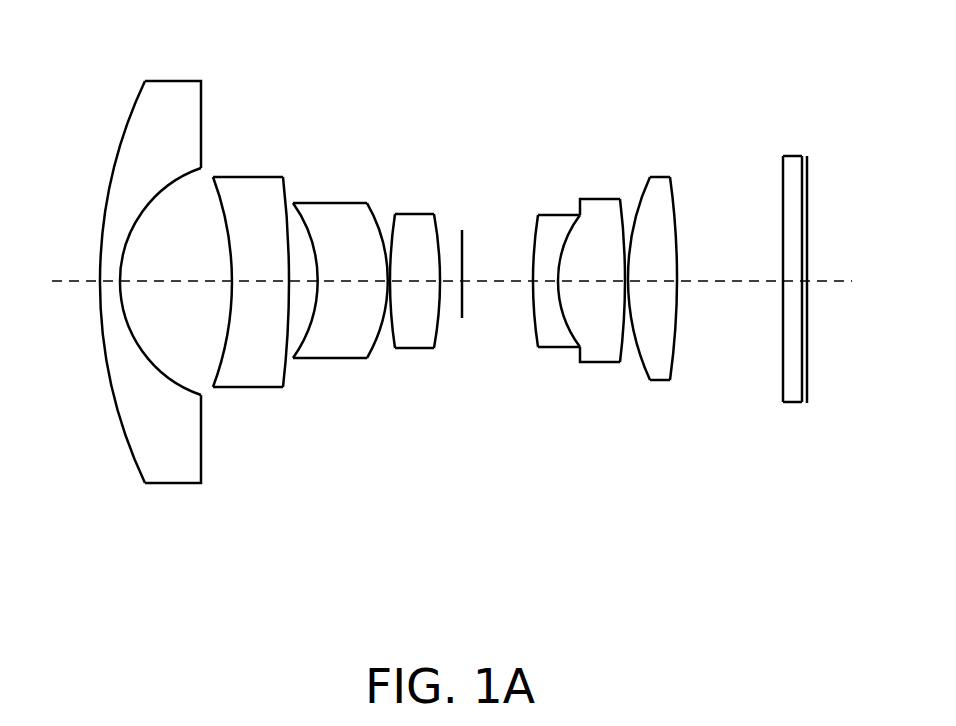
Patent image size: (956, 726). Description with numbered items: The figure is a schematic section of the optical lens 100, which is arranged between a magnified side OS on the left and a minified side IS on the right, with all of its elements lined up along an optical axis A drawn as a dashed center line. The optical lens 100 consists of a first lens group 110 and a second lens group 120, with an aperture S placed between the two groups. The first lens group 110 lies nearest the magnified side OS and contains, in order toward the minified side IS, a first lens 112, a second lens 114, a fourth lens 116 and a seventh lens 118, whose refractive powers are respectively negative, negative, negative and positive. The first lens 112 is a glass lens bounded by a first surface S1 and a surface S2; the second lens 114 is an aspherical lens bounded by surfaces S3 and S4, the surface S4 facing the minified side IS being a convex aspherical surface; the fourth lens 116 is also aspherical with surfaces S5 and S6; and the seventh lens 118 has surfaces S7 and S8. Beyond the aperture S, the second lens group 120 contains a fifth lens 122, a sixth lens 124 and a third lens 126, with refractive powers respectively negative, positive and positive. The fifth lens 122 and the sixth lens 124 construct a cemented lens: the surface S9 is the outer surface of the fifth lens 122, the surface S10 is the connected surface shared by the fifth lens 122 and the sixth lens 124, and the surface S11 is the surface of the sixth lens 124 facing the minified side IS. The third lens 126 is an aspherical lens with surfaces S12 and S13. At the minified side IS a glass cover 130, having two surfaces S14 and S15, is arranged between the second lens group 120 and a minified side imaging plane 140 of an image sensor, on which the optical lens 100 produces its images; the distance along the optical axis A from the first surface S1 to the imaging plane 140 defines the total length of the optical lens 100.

The optical lens 100 is at (868, 603).
The first lens group 110 is at (397, 552).
The first lens 112 is at (167, 286).
The second lens 114 is at (259, 321).
The fourth lens 116 is at (340, 334).
The seventh lens 118 is at (410, 339).
The second lens group 120 is at (683, 483).
The fifth lens 122 is at (544, 308).
The sixth lens 124 is at (605, 303).
The third lens 126 is at (671, 285).
The glass cover 130 is at (795, 280).
The minified side imaging plane 140 is at (807, 388).
The aperture S is at (463, 307).
The optical axis A is at (70, 293).
The magnified side OS is at (31, 284).
The minified side IS is at (872, 283).
The first surface of the first lens S1 is at (136, 101).
The surface of the first lens S2 is at (178, 185).
The surface of the second lens S3 is at (226, 233).
The surface of the second lens S4 is at (292, 186).
The surface of the fourth lens S5 is at (312, 256).
The surface of the fourth lens S6 is at (381, 203).
The surface of the seventh lens S7 is at (392, 228).
The surface of the seventh lens S8 is at (438, 227).
The surface of the fifth lens S9 is at (535, 230).
The connected surface of the fifth lens and the sixth lens S10 is at (561, 233).
The surface of the sixth lens S11 is at (627, 205).
The surface of the third lens S12 is at (643, 182).
The surface of the third lens S13 is at (676, 208).
The surface of the glass cover S14 is at (782, 170).
The surface of the glass cover S15 is at (804, 168).